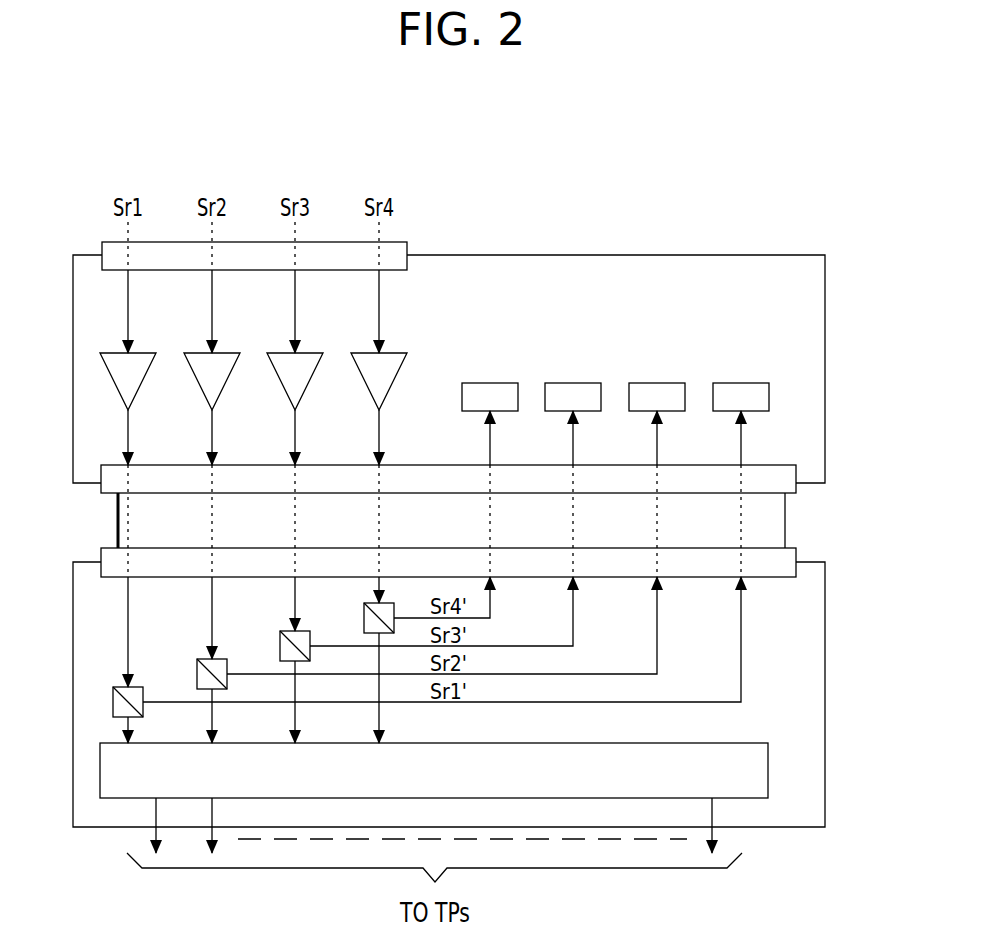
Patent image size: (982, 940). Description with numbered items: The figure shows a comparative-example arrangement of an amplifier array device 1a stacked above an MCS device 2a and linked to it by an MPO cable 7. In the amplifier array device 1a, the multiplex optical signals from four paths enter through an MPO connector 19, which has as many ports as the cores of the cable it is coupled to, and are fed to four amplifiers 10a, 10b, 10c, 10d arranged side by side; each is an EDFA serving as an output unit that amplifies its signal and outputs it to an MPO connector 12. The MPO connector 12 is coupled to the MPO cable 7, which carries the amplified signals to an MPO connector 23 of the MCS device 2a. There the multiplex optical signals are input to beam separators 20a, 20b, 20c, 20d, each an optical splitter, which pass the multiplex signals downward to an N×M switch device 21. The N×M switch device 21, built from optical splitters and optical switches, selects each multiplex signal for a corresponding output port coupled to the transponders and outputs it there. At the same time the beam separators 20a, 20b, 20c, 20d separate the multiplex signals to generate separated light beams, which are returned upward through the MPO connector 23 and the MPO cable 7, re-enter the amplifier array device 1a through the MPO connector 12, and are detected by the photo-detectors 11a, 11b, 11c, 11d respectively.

The MPO connector 19 is at (400, 242).
The amplifier array device 1a is at (825, 282).
The amplifier 10a is at (145, 353).
The amplifier 10b is at (229, 353).
The amplifier 10c is at (312, 353).
The amplifier 10d is at (395, 353).
The photo-detector 11a is at (760, 383).
The photo-detector 11b is at (677, 383).
The photo-detector 11c is at (593, 383).
The photo-detector 11d is at (510, 383).
The MPO connector 12 is at (776, 465).
The MPO cable 7 is at (118, 520).
The MPO connector 23 is at (796, 548).
The MCS device 2a is at (825, 586).
The beam separator 20a is at (143, 687).
The beam separator 20b is at (227, 659).
The beam separator 20c is at (310, 631).
The beam separator 20d is at (394, 603).
The N×M switch device 21 is at (746, 743).